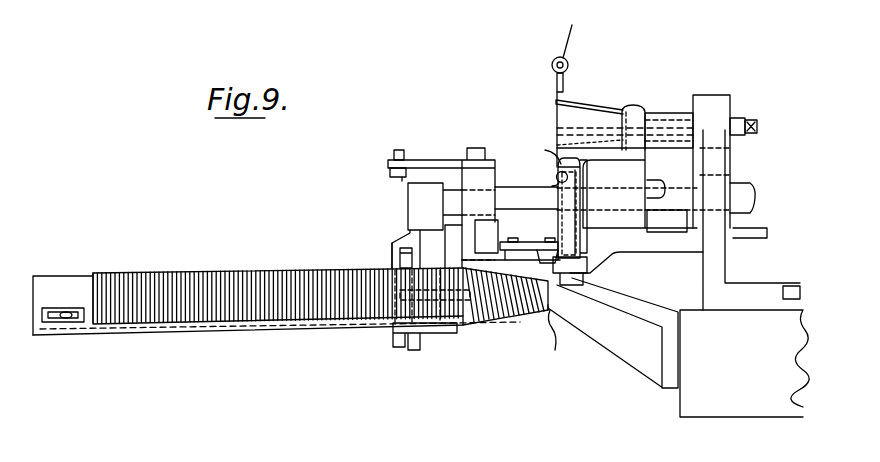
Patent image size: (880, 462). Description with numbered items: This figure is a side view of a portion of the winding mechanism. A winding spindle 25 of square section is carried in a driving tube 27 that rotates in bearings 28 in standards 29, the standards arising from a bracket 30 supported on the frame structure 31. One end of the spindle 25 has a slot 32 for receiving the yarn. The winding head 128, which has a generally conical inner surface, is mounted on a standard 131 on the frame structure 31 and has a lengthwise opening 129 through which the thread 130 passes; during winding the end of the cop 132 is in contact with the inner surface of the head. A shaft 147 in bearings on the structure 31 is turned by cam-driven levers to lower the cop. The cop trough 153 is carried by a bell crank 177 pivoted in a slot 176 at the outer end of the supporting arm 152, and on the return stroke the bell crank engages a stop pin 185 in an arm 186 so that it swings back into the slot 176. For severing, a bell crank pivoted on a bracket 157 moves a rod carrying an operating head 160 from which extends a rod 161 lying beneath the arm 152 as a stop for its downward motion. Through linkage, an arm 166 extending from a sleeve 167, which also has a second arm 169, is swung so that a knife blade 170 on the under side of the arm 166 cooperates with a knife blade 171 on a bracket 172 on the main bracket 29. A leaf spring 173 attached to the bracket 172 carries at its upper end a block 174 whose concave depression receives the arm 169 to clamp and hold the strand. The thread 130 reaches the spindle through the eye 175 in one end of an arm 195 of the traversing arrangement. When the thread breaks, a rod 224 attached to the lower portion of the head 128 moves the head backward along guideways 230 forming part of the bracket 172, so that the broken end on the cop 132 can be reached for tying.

The winding spindle 25 is at (751, 120).
The driving tube 27 is at (735, 117).
The bearings 28 is at (663, 112).
The standards 29 is at (720, 268).
The bracket 30 is at (795, 285).
The frame structure 31 is at (738, 400).
The slot 32 is at (555, 128).
The winding head 128 is at (628, 105).
The lengthwise opening 129 is at (556, 102).
The thread 130 is at (569, 33).
The standard 131 is at (635, 157).
The cop 132 is at (205, 305).
The shaft 147 is at (750, 183).
The supporting arm 152 is at (405, 228).
The trough 153 is at (290, 323).
The bracket 157 is at (515, 240).
The operating head 160 is at (475, 235).
The rod 161 is at (420, 300).
The arm 166 is at (540, 250).
The sleeve 167 is at (554, 186).
The second arm 169 is at (558, 174).
The knife blade 170 is at (548, 282).
The knife blade 171 is at (590, 272).
The bracket 172 is at (665, 252).
The leaf spring 173 is at (585, 205).
The block 174 is at (546, 148).
The eye 175 is at (552, 63).
The slot 176 is at (394, 247).
The bell crank 177 is at (412, 257).
The stop pin 185 is at (394, 178).
The arm 186 is at (428, 158).
The arm 195 is at (563, 82).
The rod 224 is at (658, 185).
The guideways 230 is at (665, 222).